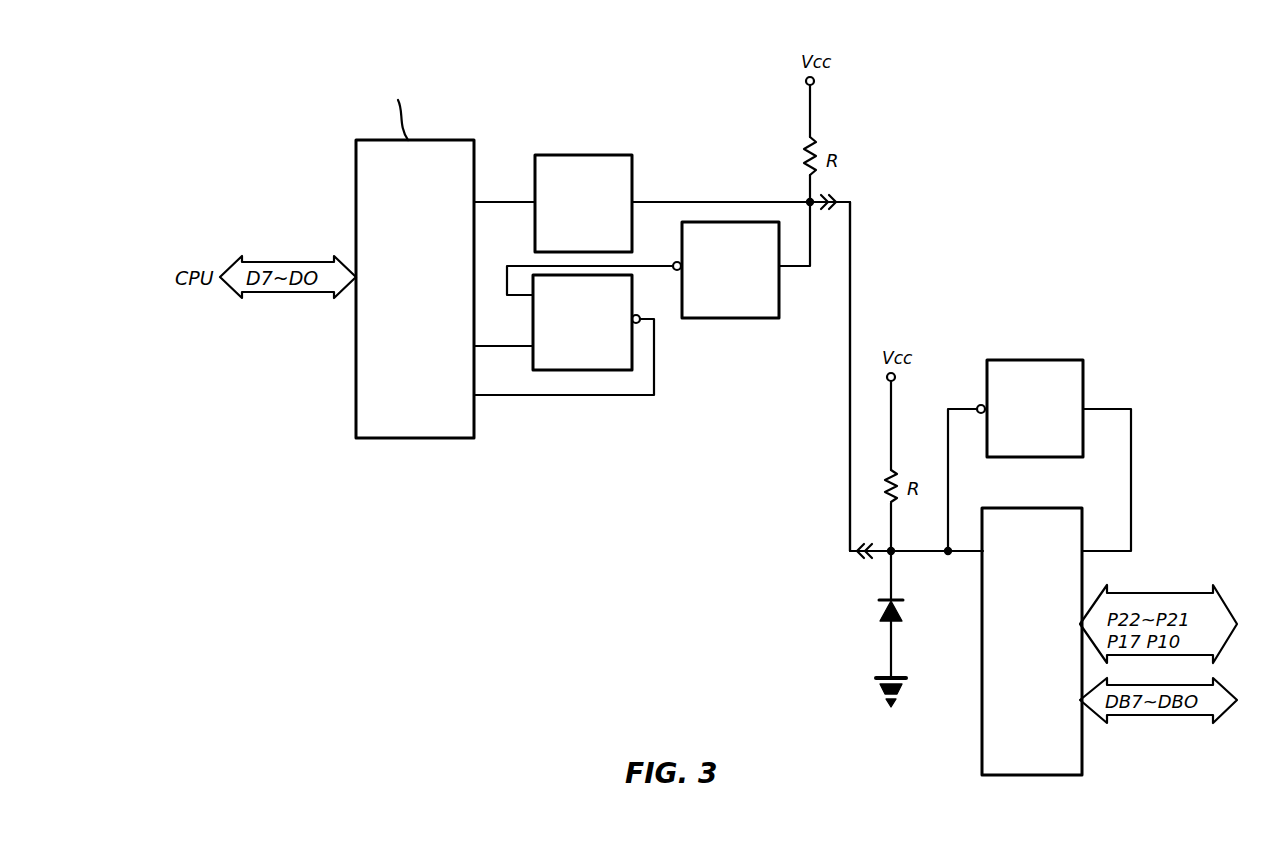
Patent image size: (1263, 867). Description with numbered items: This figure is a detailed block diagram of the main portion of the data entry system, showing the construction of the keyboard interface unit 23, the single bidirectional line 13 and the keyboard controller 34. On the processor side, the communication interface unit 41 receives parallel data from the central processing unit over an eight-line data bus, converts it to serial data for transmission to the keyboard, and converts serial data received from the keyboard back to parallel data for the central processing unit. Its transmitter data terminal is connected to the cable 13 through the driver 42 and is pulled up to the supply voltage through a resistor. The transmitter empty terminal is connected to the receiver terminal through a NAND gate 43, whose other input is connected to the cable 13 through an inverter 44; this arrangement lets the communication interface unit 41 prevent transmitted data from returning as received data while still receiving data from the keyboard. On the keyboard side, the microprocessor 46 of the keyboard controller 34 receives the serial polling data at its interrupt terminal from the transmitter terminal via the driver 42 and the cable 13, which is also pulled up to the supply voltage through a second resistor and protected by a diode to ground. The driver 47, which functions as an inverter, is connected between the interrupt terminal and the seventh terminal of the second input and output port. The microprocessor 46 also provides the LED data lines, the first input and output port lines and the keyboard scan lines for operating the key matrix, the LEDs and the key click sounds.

The communication interface unit 41 is at (433, 434).
The driver 42 is at (626, 155).
The NAND gate 43 is at (533, 370).
The inverter 44 is at (757, 318).
The keyboard interface unit 23 is at (522, 450).
The single bidirectional line 13 is at (849, 447).
The keyboard controller 34 is at (1039, 429).
The driver 47 is at (1075, 458).
The microprocessor 46 is at (982, 740).